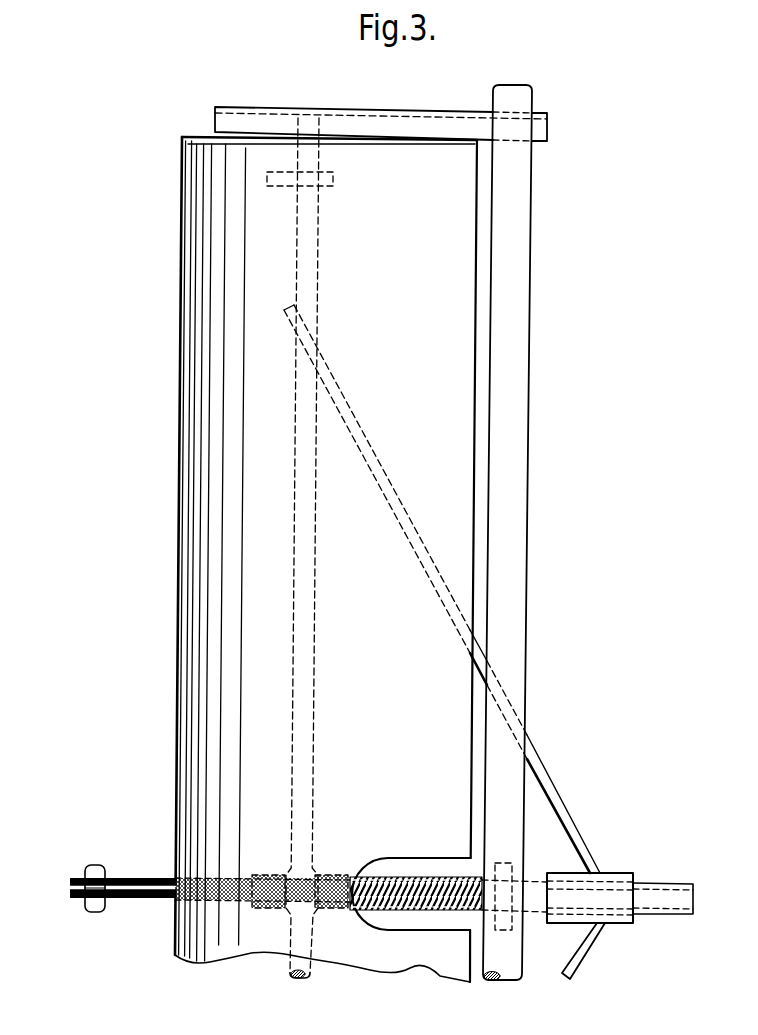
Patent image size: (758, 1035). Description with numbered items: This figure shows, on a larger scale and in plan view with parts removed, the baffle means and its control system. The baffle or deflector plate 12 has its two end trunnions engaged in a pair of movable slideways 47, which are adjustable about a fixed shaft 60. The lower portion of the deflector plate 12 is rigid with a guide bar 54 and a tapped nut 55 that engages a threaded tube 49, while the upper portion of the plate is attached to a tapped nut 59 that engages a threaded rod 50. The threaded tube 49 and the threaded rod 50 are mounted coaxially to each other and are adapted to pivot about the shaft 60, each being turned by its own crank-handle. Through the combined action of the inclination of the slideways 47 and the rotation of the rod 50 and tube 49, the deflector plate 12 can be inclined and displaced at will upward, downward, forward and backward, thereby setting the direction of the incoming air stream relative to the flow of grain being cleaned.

The deflector plate 12 is at (230, 568).
The movable slideways 47 is at (400, 120).
The threaded tube 49 is at (420, 905).
The threaded rod 50 is at (145, 898).
The guide bar 54 is at (575, 832).
The tapped nut 55 is at (290, 923).
The tapped nut 59 is at (103, 910).
The fixed shaft 60 is at (517, 453).